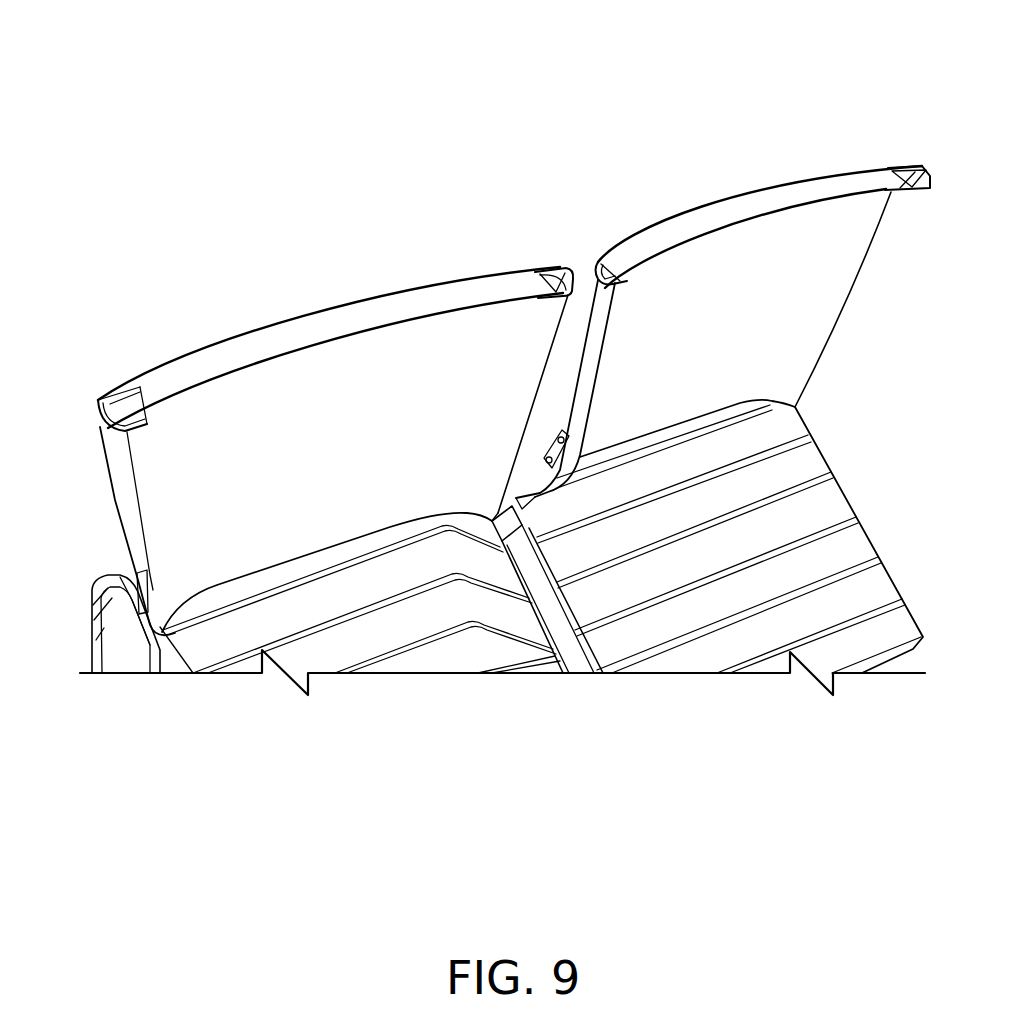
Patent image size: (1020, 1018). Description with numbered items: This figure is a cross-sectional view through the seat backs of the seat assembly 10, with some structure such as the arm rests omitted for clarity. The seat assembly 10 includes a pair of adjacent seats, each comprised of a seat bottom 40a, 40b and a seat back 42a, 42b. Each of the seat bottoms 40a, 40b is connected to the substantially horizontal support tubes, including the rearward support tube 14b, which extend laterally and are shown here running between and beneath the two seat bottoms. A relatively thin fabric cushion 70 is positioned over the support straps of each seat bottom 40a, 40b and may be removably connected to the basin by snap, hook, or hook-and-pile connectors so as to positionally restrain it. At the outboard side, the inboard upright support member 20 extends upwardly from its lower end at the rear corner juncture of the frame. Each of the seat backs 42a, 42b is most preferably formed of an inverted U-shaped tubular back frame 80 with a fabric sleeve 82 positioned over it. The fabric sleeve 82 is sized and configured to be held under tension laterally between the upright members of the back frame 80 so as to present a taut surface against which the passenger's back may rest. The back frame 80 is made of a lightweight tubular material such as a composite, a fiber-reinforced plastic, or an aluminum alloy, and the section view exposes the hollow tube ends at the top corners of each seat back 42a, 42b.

The seat assembly 10 is at (312, 85).
The rearward horizontal support tube 14b is at (513, 527).
The inboard upright support member 20 is at (105, 648).
The seat bottom 40a is at (418, 634).
The seat bottom 40b is at (756, 599).
The seat back 42a is at (324, 461).
The seat back 42b is at (755, 335).
The fabric cushion 70 is at (876, 578).
The tubular back frame 80 is at (118, 405).
The fabric sleeve 82 is at (308, 332).